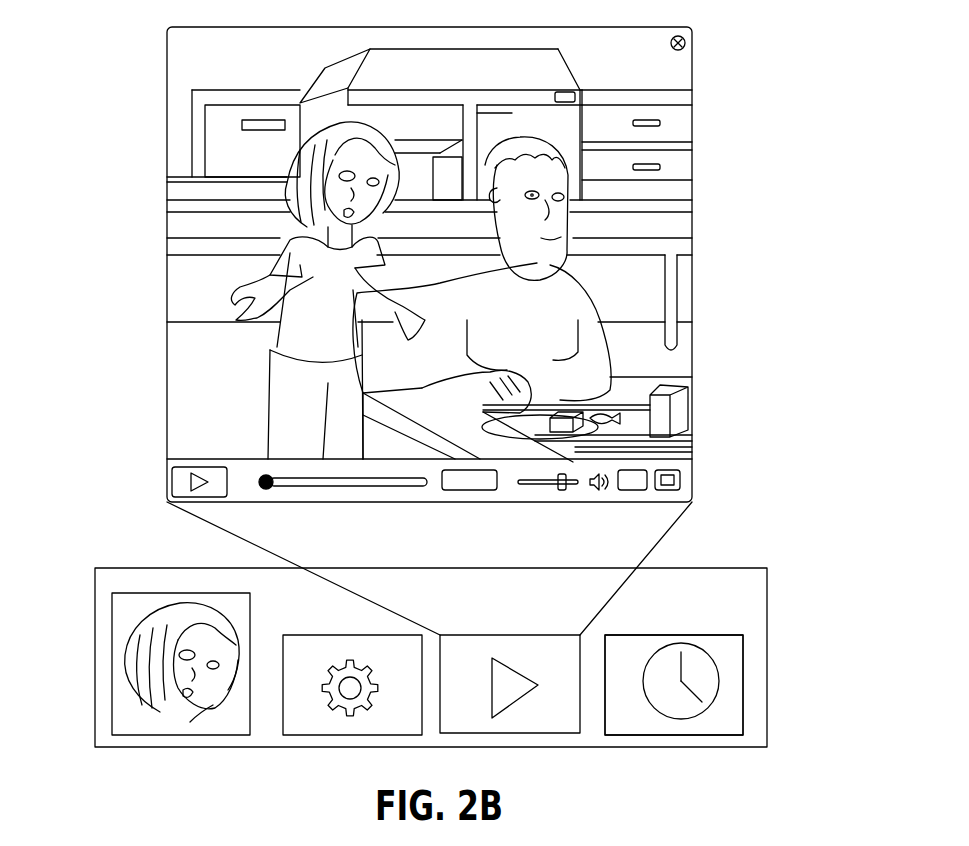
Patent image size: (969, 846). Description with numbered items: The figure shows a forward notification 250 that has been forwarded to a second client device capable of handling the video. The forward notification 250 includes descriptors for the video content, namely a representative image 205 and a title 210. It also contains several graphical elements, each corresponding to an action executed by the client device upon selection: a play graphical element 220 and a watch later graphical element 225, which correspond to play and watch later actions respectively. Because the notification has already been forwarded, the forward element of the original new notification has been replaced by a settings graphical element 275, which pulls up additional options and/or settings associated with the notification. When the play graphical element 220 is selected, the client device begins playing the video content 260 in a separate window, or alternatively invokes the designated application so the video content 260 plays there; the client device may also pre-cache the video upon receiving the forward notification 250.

The video content 260 is at (196, 283).
The representative image 205 is at (112, 632).
The title 210 is at (553, 598).
The settings graphical element 275 is at (349, 742).
The play graphical element 220 is at (552, 716).
The watch later graphical element 225 is at (690, 742).
The forward notification 250 is at (725, 606).